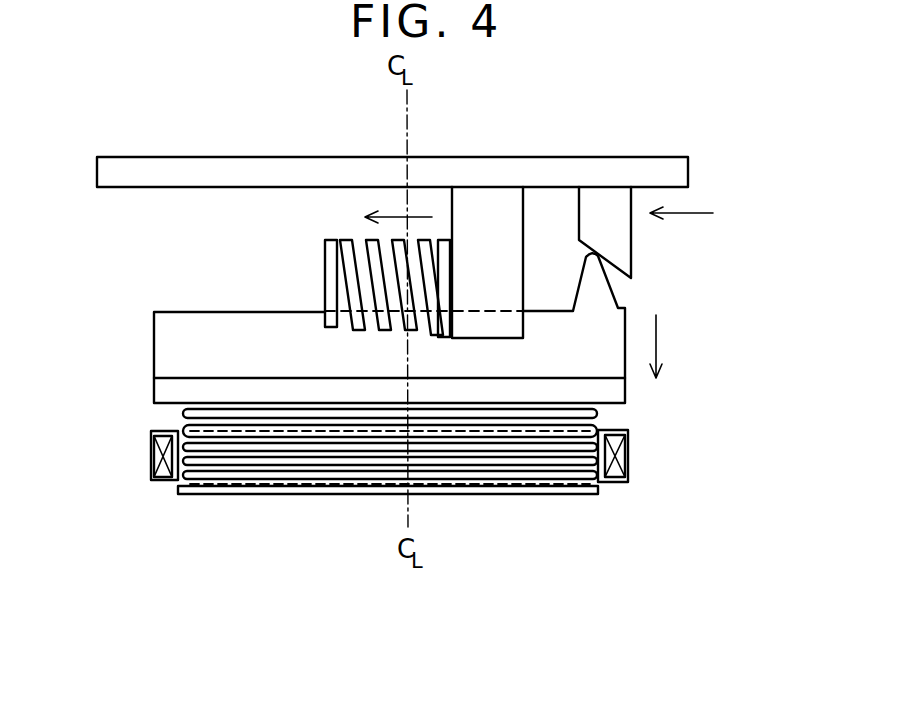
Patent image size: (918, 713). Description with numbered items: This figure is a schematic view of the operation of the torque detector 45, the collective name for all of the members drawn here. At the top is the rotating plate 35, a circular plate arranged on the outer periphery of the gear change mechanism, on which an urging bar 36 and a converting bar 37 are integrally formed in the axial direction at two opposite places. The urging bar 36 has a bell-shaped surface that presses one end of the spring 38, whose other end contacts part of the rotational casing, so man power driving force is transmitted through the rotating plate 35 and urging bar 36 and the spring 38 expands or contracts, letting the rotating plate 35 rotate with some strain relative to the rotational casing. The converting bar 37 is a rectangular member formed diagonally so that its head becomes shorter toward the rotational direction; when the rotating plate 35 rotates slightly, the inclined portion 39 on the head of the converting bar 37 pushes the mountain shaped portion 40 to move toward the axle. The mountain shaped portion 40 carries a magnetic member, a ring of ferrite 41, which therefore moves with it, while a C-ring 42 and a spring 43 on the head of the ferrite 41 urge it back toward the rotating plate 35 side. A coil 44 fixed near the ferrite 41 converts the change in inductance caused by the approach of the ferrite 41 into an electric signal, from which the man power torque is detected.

The rotating plate 35 is at (612, 170).
The urging bar 36 is at (486, 210).
The converting bar 37 is at (617, 228).
The spring 38 is at (397, 247).
The inclined portion 39 is at (618, 272).
The mountain shaped portion 40 is at (462, 374).
The ferrite 41 is at (607, 395).
The C-ring 42 is at (382, 490).
The spring 43 is at (575, 450).
The coil 44 is at (163, 470).
The torque detector 45 is at (388, 527).